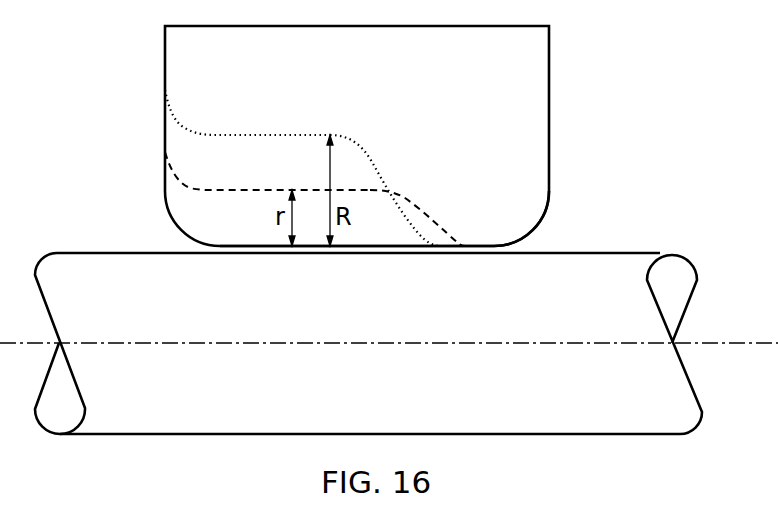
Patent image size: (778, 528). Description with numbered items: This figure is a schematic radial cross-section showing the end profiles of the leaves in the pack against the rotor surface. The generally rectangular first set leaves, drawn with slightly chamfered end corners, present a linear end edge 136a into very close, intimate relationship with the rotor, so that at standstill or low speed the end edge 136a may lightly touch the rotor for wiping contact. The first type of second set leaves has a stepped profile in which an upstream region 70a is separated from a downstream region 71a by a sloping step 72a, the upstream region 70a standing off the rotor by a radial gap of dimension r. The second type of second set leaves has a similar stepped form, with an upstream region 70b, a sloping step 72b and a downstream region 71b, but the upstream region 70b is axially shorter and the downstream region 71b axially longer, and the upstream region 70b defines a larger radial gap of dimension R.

The upstream region 70a is at (239, 188).
The upstream region 70b is at (238, 133).
The downstream region 71a is at (494, 244).
The downstream region 71b is at (468, 244).
The sloping step 72a is at (422, 210).
The sloping step 72b is at (372, 162).
The linear end edge 136a is at (315, 247).